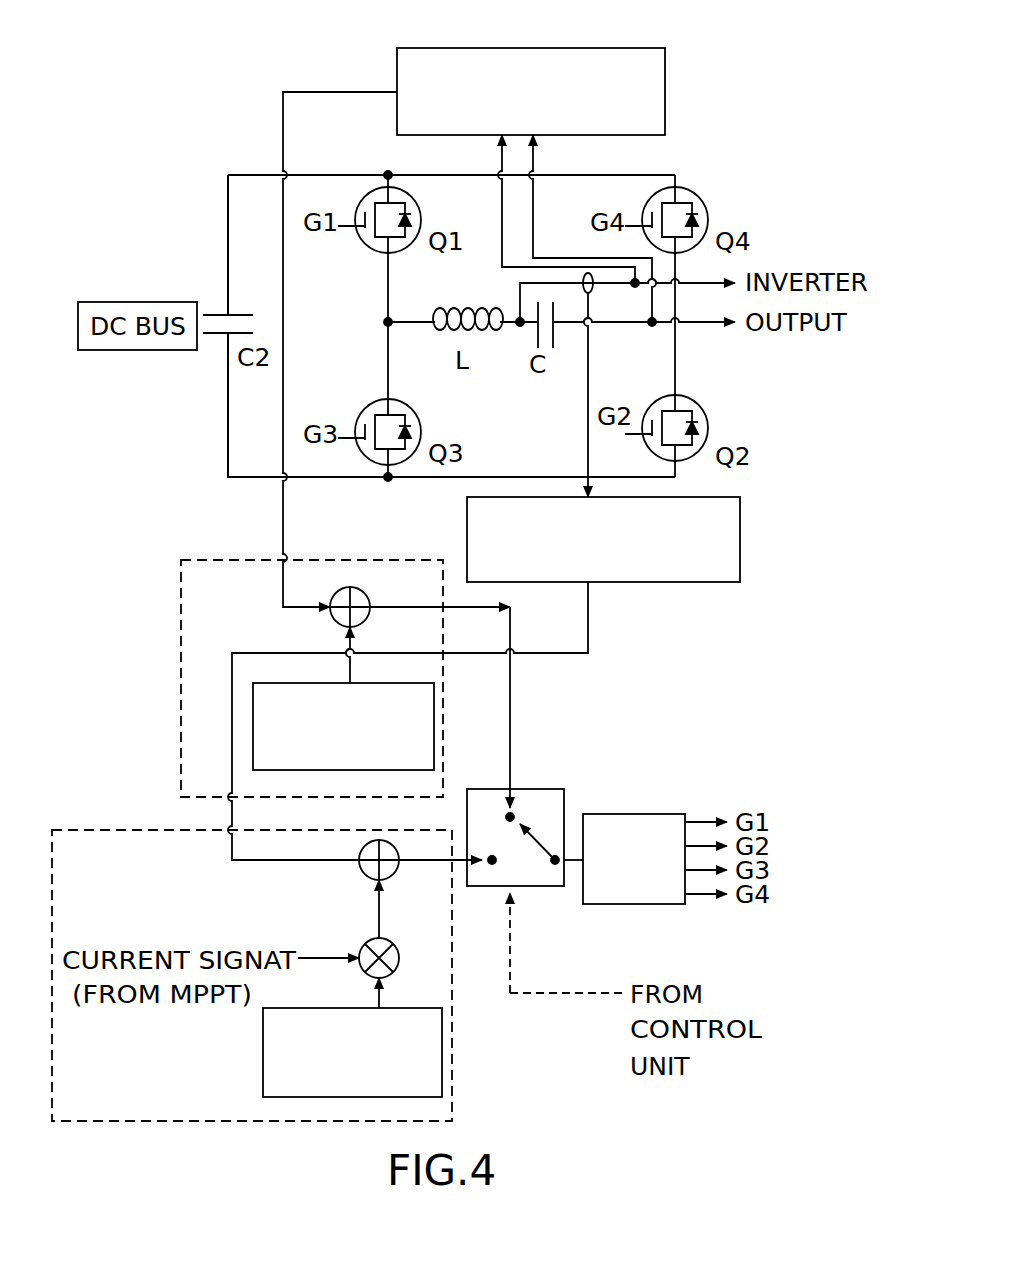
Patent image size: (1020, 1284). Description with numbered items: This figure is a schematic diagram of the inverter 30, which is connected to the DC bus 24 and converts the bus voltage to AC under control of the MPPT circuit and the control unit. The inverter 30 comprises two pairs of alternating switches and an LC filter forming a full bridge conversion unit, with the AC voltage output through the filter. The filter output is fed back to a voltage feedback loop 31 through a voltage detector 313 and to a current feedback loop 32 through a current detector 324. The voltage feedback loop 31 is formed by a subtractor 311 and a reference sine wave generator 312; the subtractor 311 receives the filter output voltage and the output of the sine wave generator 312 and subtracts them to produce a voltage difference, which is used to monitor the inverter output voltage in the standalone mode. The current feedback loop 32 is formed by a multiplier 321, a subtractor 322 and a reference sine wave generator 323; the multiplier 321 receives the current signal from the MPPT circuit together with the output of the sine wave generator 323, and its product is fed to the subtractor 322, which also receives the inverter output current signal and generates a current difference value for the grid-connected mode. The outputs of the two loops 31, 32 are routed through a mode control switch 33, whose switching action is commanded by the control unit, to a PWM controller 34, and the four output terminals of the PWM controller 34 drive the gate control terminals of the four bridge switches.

The DC bus 24 is at (228, 238).
The inverter 30 is at (140, 712).
The voltage feedback loop 31 is at (200, 618).
The current feedback loop 32 is at (160, 848).
The mode control switch 33 is at (536, 800).
The PWM controller 34 is at (648, 822).
The subtractor 311 is at (358, 590).
The reference sine wave generator 312 is at (410, 693).
The voltage detector 313 is at (496, 53).
The multiplier 321 is at (386, 936).
The subtractor 322 is at (372, 872).
The reference sine wave generator 323 is at (272, 1035).
The current detector 324 is at (658, 570).